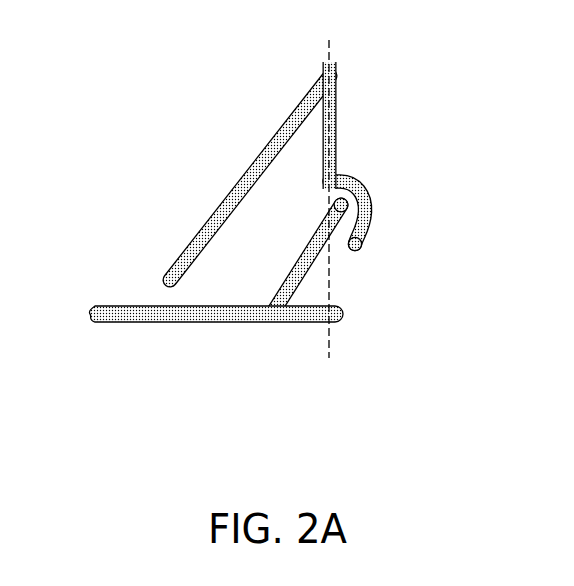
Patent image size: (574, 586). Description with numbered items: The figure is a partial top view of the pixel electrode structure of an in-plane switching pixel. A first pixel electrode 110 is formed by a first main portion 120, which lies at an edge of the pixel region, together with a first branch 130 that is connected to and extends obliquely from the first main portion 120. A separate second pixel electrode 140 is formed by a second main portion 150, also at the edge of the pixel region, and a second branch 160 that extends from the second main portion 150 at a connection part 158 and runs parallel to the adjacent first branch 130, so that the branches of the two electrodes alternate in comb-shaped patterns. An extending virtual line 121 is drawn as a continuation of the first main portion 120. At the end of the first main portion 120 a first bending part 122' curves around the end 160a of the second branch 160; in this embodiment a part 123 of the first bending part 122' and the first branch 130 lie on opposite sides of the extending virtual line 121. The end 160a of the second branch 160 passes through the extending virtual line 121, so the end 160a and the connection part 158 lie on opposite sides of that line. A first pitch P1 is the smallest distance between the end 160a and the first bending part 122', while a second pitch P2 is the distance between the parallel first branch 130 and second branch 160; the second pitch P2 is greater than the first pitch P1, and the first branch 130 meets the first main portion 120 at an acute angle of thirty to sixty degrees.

The first pixel electrode 110 is at (311, 173).
The first main portion 120 is at (337, 173).
The extending virtual line 121 is at (330, 338).
The first bending part 122' is at (392, 248).
The part of the first bending part 123 is at (357, 252).
The first branch 130 is at (298, 111).
The second pixel electrode 140 is at (240, 314).
The second main portion 150 is at (227, 322).
The connection part 158 is at (211, 334).
The second branch 160 is at (290, 322).
The end of the second branch 160a is at (347, 213).
The first pitch P1 is at (348, 212).
The second pitch P2 is at (288, 270).